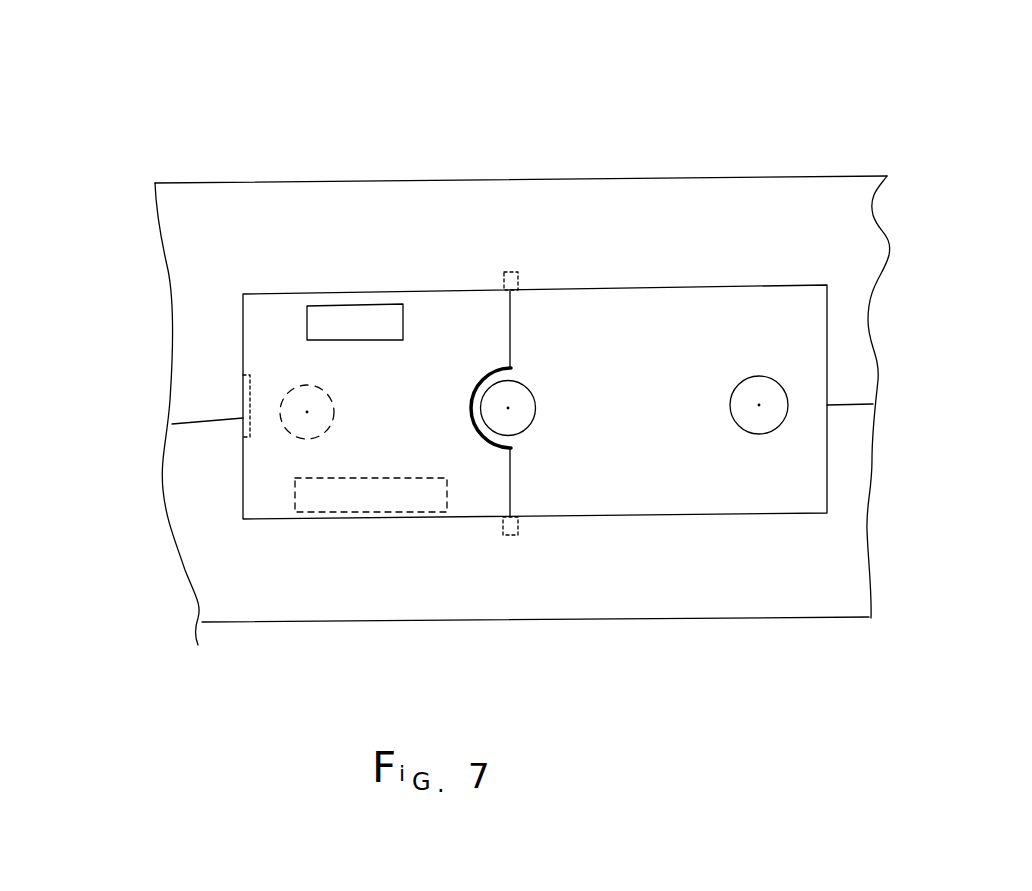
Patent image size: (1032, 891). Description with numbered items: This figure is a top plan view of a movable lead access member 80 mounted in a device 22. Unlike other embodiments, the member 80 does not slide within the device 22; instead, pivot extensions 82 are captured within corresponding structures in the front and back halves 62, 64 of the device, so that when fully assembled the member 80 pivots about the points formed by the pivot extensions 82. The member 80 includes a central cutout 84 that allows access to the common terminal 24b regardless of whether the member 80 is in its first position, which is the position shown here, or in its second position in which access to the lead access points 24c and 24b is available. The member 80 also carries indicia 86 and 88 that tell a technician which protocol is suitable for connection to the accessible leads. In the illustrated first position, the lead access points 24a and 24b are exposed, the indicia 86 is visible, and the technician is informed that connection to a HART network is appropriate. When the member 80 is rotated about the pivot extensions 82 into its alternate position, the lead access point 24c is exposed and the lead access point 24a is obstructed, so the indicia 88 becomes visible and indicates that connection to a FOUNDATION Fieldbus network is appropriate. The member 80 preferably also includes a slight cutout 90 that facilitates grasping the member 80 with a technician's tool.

The device 22 is at (776, 176).
The front half 62 is at (598, 622).
The back half 64 is at (625, 178).
The movable lead access member 80 is at (377, 291).
The pivot extensions 82 is at (513, 272).
The central cutout 84 is at (472, 395).
The indicia 86 is at (307, 323).
The indicia 88 is at (294, 503).
The slight cutout 90 is at (243, 384).
The lead access point 24a is at (762, 434).
The common terminal 24b is at (530, 430).
The lead access point 24c is at (288, 431).